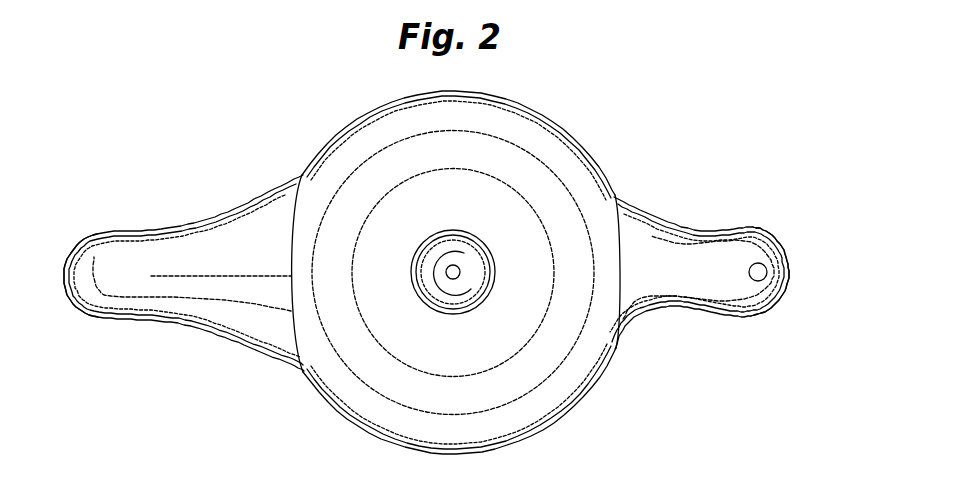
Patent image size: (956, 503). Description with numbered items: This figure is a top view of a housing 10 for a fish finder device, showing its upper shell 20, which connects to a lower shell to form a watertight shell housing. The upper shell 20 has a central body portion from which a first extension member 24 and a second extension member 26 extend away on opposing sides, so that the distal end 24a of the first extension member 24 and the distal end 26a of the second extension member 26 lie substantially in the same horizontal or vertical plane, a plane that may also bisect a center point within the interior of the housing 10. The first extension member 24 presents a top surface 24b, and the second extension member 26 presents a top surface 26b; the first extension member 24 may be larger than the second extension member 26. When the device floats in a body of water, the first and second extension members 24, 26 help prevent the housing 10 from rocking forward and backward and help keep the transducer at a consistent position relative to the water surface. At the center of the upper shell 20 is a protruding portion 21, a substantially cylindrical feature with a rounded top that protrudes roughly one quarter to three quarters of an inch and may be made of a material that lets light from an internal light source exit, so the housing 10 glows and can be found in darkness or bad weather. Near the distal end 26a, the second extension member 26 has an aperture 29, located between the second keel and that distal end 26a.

The housing 10 is at (205, 112).
The upper shell 20 is at (465, 364).
The protruding portion 21 is at (432, 261).
The first extension member 24 is at (237, 237).
The distal end 24a is at (64, 279).
The top surface 24b is at (187, 264).
The second extension member 26 is at (729, 232).
The distal end 26a is at (782, 296).
The top surface 26b is at (697, 280).
The aperture 29 is at (763, 267).